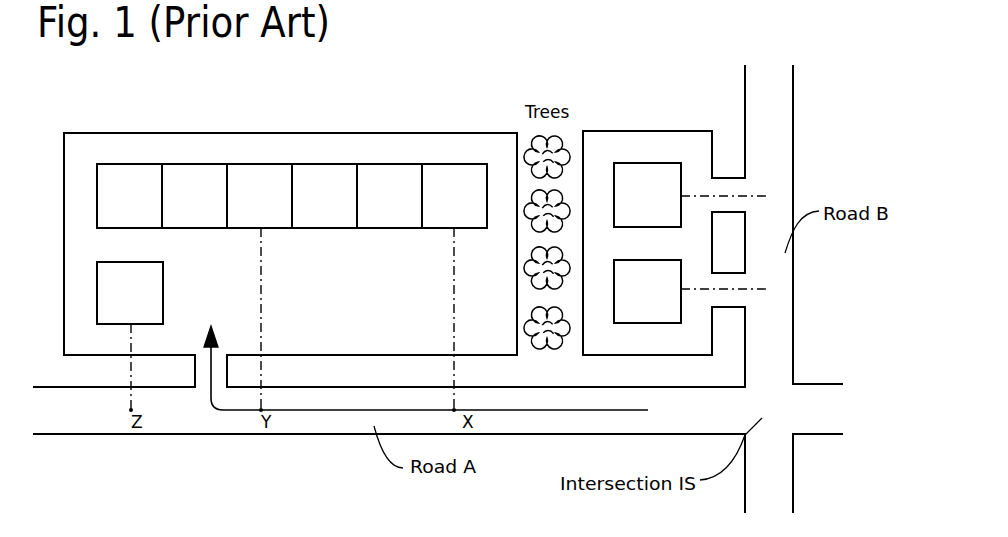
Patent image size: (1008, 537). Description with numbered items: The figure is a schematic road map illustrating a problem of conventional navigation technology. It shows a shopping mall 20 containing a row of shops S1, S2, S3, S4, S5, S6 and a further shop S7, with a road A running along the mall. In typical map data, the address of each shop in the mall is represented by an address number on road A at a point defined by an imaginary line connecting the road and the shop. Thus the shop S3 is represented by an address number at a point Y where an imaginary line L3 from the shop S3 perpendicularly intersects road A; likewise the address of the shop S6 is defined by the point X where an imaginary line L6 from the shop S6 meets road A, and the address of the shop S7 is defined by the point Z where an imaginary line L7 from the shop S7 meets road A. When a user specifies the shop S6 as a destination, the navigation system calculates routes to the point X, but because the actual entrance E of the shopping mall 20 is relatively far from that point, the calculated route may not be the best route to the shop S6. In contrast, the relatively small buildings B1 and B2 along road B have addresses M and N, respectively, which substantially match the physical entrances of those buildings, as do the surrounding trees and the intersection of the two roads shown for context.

The shopping mall 20 is at (227, 133).
The shop S1 is at (129, 196).
The shop S2 is at (194, 196).
The shop S3 is at (259, 196).
The shop S4 is at (324, 196).
The shop S5 is at (389, 196).
The shop S6 is at (454, 196).
The shop S7 is at (130, 293).
The building B1 is at (647, 195).
The building B2 is at (647, 291).
The imaginary line L3 is at (262, 305).
The imaginary line L6 is at (455, 312).
The imaginary line L7 is at (131, 362).
The address M is at (728, 185).
The address N is at (728, 278).
The entrance E is at (426, 355).